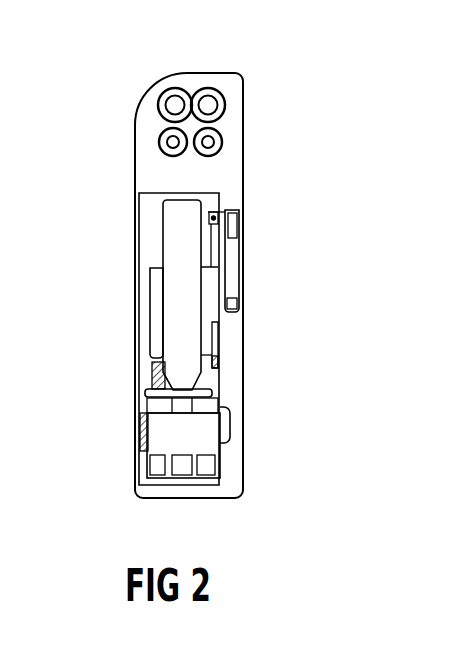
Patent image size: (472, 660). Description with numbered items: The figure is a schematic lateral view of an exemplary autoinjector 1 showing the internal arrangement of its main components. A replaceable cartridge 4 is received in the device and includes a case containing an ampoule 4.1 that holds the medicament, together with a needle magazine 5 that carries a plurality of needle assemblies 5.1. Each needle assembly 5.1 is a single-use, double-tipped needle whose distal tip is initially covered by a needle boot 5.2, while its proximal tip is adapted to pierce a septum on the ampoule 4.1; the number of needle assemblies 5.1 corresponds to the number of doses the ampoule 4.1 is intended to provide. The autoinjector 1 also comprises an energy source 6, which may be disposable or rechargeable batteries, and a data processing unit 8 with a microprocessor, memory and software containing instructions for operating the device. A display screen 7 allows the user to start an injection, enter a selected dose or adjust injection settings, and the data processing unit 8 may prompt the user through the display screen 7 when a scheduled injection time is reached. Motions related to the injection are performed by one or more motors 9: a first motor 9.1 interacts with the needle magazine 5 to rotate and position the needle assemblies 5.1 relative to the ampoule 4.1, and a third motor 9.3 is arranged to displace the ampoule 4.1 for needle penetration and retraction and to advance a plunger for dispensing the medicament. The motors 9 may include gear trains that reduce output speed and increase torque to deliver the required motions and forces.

The autoinjector 1 is at (182, 265).
The cartridge 4 is at (128, 343).
The ampoule 4.1 is at (173, 236).
The needle magazine 5 is at (140, 430).
The needle assembly 5.1 is at (152, 468).
The needle boot 5.2 is at (152, 468).
The energy source 6 is at (213, 108).
The display screen 7 is at (232, 252).
The data processing unit 8 is at (220, 335).
The motor 9 is at (232, 430).
The first motor 9.1 is at (232, 430).
The third motor 9.3 is at (150, 296).